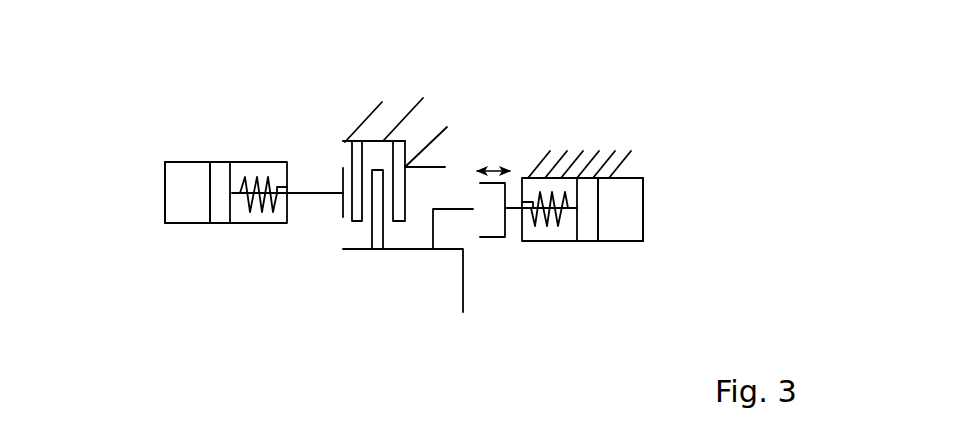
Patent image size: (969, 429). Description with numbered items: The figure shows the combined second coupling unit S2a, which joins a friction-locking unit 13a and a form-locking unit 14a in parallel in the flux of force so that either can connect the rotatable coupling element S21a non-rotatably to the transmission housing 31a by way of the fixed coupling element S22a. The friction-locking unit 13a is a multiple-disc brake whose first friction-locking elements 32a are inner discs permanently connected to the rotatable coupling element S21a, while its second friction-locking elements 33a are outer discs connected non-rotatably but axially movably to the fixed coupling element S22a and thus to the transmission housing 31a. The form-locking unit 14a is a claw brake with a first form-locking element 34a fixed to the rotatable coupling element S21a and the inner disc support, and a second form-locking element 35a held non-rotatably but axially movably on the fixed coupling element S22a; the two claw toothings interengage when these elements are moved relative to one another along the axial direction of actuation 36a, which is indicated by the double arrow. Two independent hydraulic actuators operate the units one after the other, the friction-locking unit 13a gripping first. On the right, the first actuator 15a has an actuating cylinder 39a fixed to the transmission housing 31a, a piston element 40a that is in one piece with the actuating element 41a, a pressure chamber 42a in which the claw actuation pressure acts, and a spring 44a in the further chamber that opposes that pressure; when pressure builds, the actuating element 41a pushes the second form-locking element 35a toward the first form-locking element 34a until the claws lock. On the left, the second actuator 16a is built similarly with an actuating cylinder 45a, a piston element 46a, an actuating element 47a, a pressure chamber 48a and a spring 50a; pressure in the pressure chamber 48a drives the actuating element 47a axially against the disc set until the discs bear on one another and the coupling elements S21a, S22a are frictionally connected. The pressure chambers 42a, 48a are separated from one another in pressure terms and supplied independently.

The second coupling unit S2a is at (392, 196).
The second actuator 16a is at (201, 206).
The actuating cylinder 45a is at (165, 212).
The pressure chamber 48a is at (183, 182).
The piston element 46a is at (220, 213).
The spring 50a is at (265, 173).
The actuating element 47a is at (305, 195).
The friction-locking unit 13a is at (340, 199).
The second friction-locking elements 33a is at (357, 185).
The first friction-locking elements 32a is at (377, 235).
The fixed coupling element S22a is at (374, 142).
The transmission housing 31a is at (432, 143).
The form-locking unit 14a is at (441, 237).
The rotatable coupling element S21a is at (410, 250).
The first form-locking element 34a is at (458, 207).
The second form-locking element 35a is at (507, 238).
The direction of actuation 36a is at (492, 166).
The actuating element 41a is at (513, 193).
The first actuator 15a is at (631, 186).
The actuating cylinder 39a is at (643, 221).
The pressure chamber 42a is at (622, 193).
The piston element 40a is at (590, 228).
The spring 44a is at (553, 193).